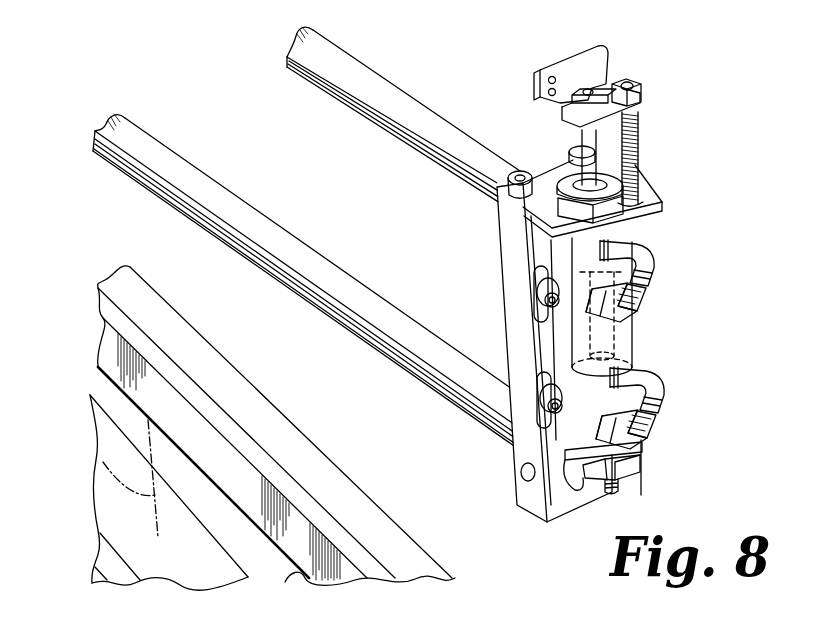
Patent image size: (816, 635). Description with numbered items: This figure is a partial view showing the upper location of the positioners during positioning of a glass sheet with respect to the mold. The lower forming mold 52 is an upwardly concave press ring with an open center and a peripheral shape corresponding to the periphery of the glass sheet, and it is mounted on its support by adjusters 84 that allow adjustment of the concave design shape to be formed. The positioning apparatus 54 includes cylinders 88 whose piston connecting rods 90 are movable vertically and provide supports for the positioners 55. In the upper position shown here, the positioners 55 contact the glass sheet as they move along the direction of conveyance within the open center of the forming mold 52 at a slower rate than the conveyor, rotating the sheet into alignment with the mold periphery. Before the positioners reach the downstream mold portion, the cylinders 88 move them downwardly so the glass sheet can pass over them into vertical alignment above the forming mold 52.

The lower forming mold 52 is at (99, 360).
The positioning apparatus 54 is at (420, 383).
The positioner 55 is at (609, 60).
The adjuster 84 is at (100, 458).
The cylinder 88 is at (637, 356).
The piston connecting rod 90 is at (638, 137).